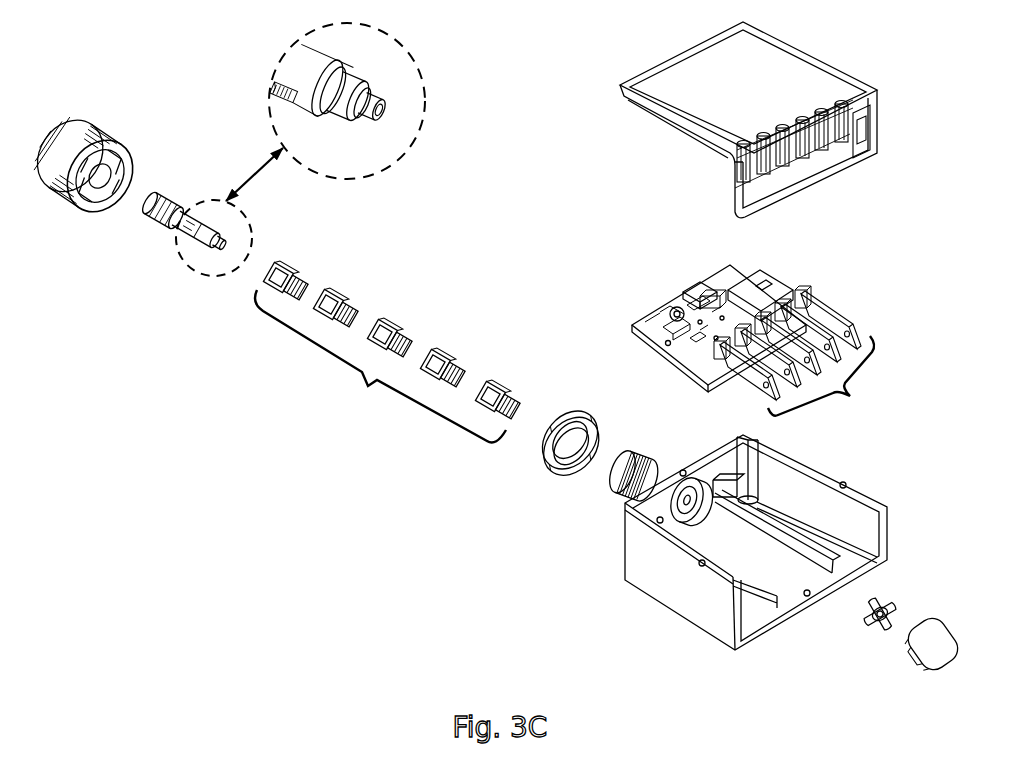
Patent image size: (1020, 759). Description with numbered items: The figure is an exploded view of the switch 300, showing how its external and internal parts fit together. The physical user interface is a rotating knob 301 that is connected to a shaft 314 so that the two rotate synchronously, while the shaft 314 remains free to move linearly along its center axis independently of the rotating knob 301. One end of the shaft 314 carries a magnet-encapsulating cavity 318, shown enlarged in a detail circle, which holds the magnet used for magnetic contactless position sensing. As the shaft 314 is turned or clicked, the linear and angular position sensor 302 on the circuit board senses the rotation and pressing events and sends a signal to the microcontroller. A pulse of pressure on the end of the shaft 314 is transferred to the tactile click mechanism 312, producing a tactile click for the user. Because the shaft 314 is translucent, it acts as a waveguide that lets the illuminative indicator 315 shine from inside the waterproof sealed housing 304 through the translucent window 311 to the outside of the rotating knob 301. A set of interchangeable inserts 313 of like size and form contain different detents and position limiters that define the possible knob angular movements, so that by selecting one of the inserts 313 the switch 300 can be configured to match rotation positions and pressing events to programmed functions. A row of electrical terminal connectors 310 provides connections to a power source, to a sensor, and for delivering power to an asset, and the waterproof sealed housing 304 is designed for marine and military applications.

The switch 300 is at (347, 593).
The rotating knob 301 is at (88, 214).
The linear and angular position sensor 302 is at (717, 324).
The waterproof sealed housing 304 is at (672, 583).
The electrical terminal connectors 310 is at (890, 470).
The translucent window 311 is at (912, 648).
The tactile click mechanism 312 is at (866, 612).
The interchangeable inserts 313 is at (320, 478).
The shaft 314 is at (163, 193).
The illuminative indicator 315 is at (687, 281).
The magnet-encapsulating cavity 318 is at (386, 115).